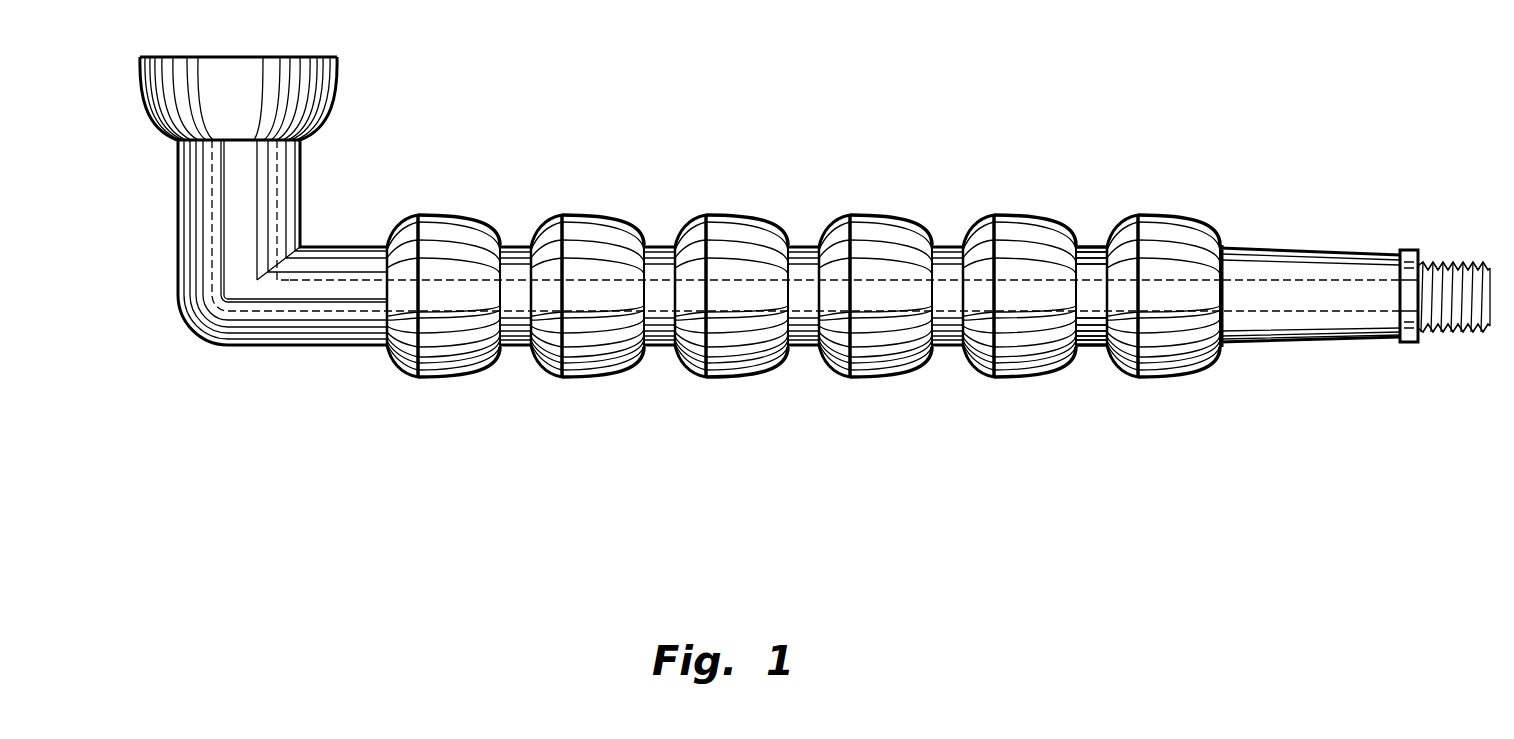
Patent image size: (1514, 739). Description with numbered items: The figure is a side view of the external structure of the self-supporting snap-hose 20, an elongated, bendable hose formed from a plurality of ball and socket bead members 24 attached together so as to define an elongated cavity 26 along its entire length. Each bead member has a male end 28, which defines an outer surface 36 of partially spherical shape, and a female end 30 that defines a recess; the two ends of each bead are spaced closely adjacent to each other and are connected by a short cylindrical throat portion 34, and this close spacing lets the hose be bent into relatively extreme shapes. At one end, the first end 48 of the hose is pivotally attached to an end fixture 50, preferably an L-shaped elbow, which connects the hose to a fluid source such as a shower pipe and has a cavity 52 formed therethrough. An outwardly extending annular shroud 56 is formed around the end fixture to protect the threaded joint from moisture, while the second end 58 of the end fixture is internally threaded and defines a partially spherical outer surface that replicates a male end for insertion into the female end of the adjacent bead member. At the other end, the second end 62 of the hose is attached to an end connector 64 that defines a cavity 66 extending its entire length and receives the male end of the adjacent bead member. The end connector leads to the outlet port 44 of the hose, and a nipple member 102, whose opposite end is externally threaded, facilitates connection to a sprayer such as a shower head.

The self-supporting snap-hose 20 is at (603, 402).
The ball and socket bead members 24 is at (1103, 248).
The elongated cavity 26 is at (1070, 353).
The male end 28 is at (977, 338).
The female end 30 is at (865, 378).
The throat portion 34 is at (662, 247).
The outer surface 36 is at (548, 233).
The outlet port 44 is at (1492, 280).
The first end 48 is at (427, 377).
The end fixture 50 is at (340, 347).
The cavity 52 is at (248, 312).
The annular shroud 56 is at (330, 90).
The second end 58 is at (405, 232).
The second end 62 is at (1113, 357).
The end connector 64 is at (1287, 343).
The cavity 66 is at (1328, 275).
The nipple member 102 is at (1410, 250).